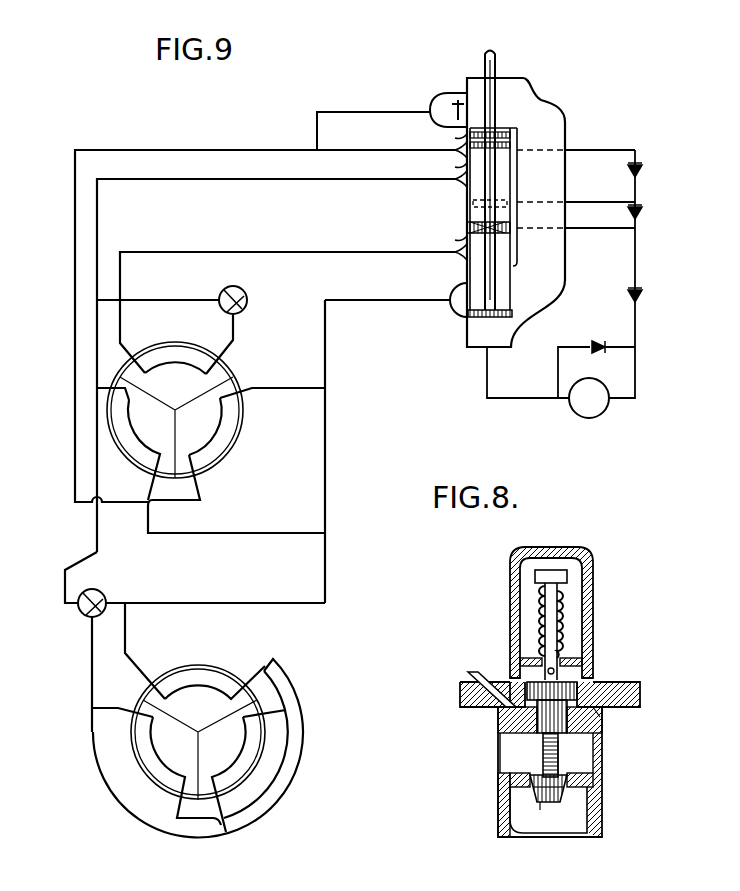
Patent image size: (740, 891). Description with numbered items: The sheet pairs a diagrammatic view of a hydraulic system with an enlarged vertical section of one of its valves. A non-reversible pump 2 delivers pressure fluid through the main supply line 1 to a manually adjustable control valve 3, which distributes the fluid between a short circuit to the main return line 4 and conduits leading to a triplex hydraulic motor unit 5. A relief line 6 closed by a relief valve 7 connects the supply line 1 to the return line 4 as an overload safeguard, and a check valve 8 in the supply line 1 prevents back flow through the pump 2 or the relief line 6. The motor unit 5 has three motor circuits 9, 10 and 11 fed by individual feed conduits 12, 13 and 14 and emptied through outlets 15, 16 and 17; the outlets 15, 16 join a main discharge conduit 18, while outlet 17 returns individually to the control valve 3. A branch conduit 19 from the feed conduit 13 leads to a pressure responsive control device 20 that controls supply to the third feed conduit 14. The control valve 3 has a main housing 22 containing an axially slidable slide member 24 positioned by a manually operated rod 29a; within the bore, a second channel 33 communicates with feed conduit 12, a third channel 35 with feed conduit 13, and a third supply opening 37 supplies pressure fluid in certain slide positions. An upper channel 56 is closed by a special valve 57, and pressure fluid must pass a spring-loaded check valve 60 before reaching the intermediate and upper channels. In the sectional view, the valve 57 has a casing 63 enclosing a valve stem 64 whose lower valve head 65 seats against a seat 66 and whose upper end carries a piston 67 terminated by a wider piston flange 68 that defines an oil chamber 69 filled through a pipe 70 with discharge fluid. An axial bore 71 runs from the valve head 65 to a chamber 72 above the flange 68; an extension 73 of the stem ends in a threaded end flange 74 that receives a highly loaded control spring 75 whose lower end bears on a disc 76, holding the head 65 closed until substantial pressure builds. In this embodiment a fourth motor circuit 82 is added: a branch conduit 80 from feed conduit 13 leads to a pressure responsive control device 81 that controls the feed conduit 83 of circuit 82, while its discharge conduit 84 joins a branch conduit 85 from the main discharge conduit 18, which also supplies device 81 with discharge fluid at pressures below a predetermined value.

In FIG. 9, the main supply line 1 is at (640, 335).
In FIG. 9, the non-reversible pump 2 is at (590, 418).
In FIG. 9, the manually adjustable control valve 3 is at (475, 334).
In FIG. 9, the main return line 4 is at (487, 375).
In FIG. 9, the hydraulic motor unit 5 is at (190, 421).
In FIG. 9, the relief line 6 is at (558, 375).
In FIG. 9, the relief valve 7 is at (600, 343).
In FIG. 9, the check valve 8 is at (644, 296).
In FIG. 9, the first motor circuit 9 is at (236, 436).
In FIG. 9, the second motor circuit 10 is at (148, 450).
In FIG. 9, the third motor circuit 11 is at (175, 378).
In FIG. 9, the feed conduit 12 is at (190, 150).
In FIG. 9, the feed conduit 13 is at (190, 179).
In FIG. 9, the feed conduit 14 is at (232, 348).
In FIG. 9, the outlet 15 is at (268, 390).
In FIG. 9, the outlet 16 is at (242, 533).
In FIG. 9, the outlet 17 is at (190, 252).
In FIG. 9, the main discharge conduit 18 is at (325, 355).
In FIG. 9, the branch conduit 19 is at (155, 300).
In FIG. 9, the pressure responsive control device 20 is at (244, 310).
In FIG. 9, the main housing 22 is at (566, 272).
In FIG. 9, the slide member 24 is at (500, 165).
In FIG. 9, the rod 29a is at (494, 56).
In FIG. 9, the second channel 33 is at (458, 148).
In FIG. 9, the third channel 35 is at (458, 181).
In FIG. 9, the third supply opening 37 is at (458, 254).
In FIG. 9, the upper channel 56 is at (583, 150).
In FIG. 9, the special valve 57 is at (644, 170).
In FIG. 8, the special valve 57 is at (612, 801).
In FIG. 9, the check valve 60 is at (644, 212).
In FIG. 8, the casing 63 is at (634, 682).
In FIG. 8, the valve stem 64 is at (568, 742).
In FIG. 8, the valve head 65 is at (538, 802).
In FIG. 8, the seat 66 is at (527, 786).
In FIG. 8, the piston 67 is at (537, 720).
In FIG. 8, the piston flange 68 is at (530, 673).
In FIG. 8, the oil chamber 69 is at (600, 709).
In FIG. 8, the pipe 70 is at (470, 672).
In FIG. 8, the axial bore 71 is at (543, 757).
In FIG. 8, the chamber 72 is at (583, 576).
In FIG. 8, the extension 73 is at (557, 613).
In FIG. 8, the end flange 74 is at (535, 576).
In FIG. 8, the control spring 75 is at (537, 610).
In FIG. 8, the disc 76 is at (570, 662).
In FIG. 9, the branch conduit 80 is at (100, 553).
In FIG. 9, the pressure responsive control device 81 is at (103, 598).
In FIG. 9, the motor circuit 82 is at (151, 766).
In FIG. 9, the feed conduit 83 is at (94, 681).
In FIG. 9, the discharge conduit 84 is at (126, 628).
In FIG. 9, the branch conduit 85 is at (288, 604).